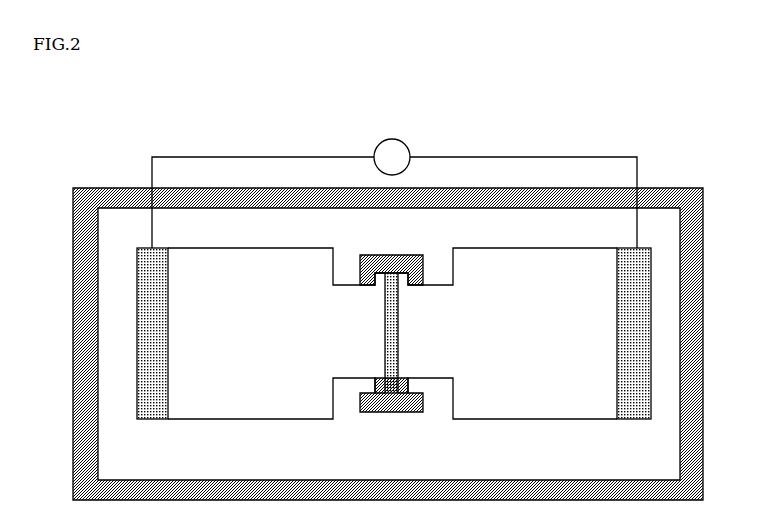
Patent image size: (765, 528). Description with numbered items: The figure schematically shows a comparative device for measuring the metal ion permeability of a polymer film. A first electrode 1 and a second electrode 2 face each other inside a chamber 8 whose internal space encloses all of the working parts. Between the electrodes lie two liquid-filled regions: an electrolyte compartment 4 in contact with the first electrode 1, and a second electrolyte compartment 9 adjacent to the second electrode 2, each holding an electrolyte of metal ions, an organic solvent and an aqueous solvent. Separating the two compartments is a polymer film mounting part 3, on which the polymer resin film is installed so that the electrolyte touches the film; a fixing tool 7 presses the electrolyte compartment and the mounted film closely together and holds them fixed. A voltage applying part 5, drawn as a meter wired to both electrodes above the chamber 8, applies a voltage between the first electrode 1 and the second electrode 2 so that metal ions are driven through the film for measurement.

The first electrode 1 is at (640, 420).
The second electrode 2 is at (148, 420).
The polymer film mounting part 3 is at (386, 384).
The electrolyte compartment 4 is at (213, 428).
The voltage applying part 5 is at (417, 140).
The fixing tool 7 is at (400, 413).
The chamber 8 is at (706, 428).
The second electrolyte compartment 9 is at (497, 425).